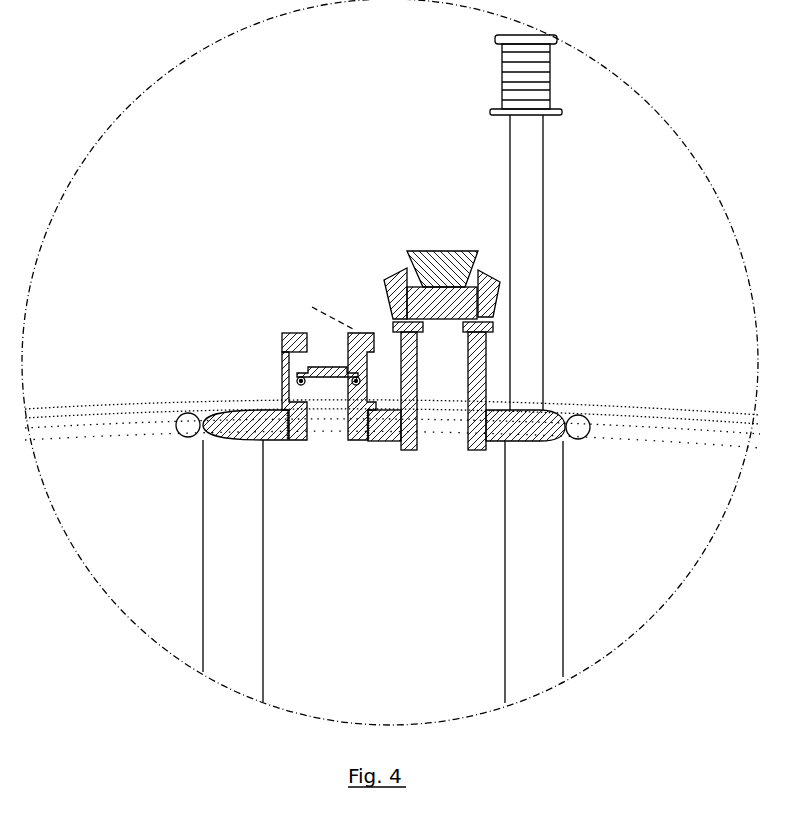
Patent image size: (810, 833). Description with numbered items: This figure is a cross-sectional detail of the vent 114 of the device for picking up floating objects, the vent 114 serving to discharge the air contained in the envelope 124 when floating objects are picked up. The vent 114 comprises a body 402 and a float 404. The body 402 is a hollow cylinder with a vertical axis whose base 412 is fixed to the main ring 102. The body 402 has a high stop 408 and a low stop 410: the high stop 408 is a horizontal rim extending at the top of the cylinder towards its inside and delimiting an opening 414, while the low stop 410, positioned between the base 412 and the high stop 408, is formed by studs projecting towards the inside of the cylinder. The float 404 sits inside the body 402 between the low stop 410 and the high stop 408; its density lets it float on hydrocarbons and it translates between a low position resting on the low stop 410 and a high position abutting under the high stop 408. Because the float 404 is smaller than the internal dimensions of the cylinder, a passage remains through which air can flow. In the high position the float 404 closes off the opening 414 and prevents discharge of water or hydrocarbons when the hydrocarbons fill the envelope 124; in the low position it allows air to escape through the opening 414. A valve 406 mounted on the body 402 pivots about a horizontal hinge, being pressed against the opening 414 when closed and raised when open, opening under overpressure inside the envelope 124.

The main ring 102 is at (393, 579).
The vent 114 is at (236, 279).
The envelope 124 is at (92, 408).
The body 402 is at (281, 364).
The float 404 is at (325, 377).
The valve 406 is at (323, 315).
The high stop 408 is at (297, 336).
The low stop 410 is at (299, 383).
The base 412 is at (355, 406).
The opening 414 is at (325, 343).